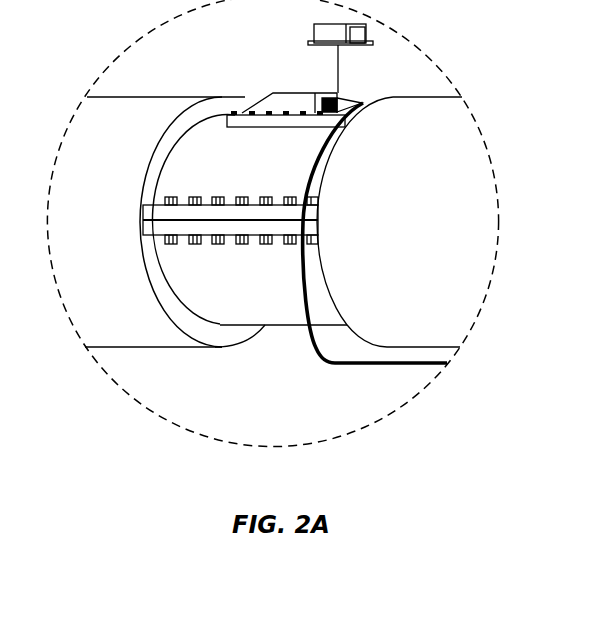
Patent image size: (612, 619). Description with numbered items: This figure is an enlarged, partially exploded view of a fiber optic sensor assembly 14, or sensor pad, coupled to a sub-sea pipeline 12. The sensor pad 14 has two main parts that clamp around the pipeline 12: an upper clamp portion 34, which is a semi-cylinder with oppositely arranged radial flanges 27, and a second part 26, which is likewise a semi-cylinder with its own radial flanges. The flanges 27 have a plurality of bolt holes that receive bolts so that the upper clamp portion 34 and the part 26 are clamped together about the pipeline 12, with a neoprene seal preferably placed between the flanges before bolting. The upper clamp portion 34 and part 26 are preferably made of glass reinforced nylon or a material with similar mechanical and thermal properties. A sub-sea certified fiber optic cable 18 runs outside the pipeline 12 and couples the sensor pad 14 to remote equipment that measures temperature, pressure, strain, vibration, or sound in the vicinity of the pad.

The sub-sea pipeline 12 is at (168, 97).
The fiber optic sensor assembly 14 is at (286, 74).
The upper clamp portion 34 is at (195, 162).
The radial flanges 27 is at (157, 213).
The part 26 is at (190, 270).
The sub-sea certified fiber optic cable 18 is at (383, 367).